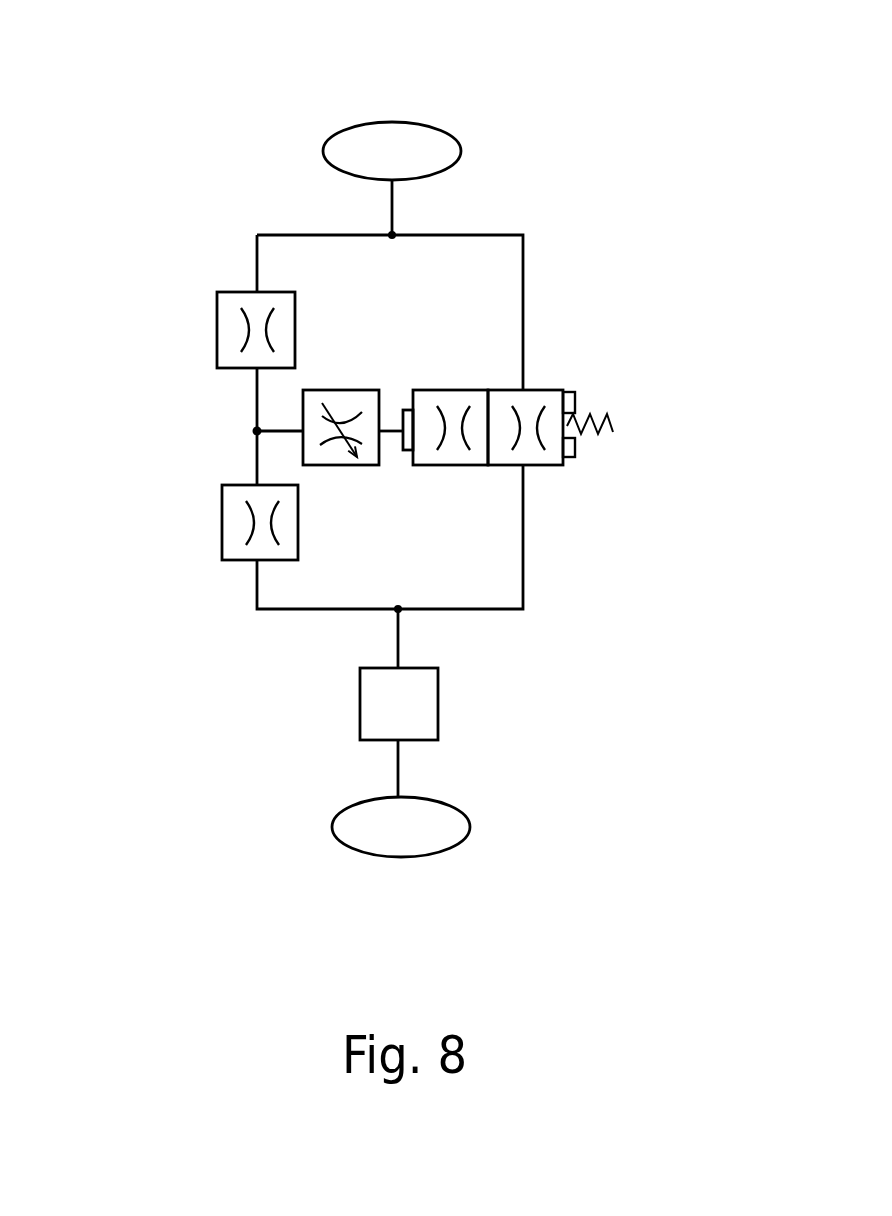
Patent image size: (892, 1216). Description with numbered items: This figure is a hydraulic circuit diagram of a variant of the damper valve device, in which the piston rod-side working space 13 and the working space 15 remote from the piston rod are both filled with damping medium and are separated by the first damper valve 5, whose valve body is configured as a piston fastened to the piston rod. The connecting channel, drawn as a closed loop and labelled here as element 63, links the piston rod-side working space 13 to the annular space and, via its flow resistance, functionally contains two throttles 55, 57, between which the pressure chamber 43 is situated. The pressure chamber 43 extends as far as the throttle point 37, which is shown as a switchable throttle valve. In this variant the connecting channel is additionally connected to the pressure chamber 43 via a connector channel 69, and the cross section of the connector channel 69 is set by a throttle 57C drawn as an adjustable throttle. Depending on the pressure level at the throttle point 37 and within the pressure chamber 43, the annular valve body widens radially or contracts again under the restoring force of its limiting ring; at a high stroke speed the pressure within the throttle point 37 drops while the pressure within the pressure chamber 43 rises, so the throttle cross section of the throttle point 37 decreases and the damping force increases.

The piston rod-side working space 13 is at (407, 165).
The working space remote from the piston rod 15 is at (440, 852).
The first damper valve 5 is at (422, 715).
The circuit loop 63 is at (285, 235).
The throttle 57 is at (217, 328).
The throttle 55 is at (233, 528).
The throttle 57C is at (347, 390).
The connector channel 69 is at (287, 427).
The pressure chamber 43 is at (390, 432).
The throttle point 37 is at (558, 468).